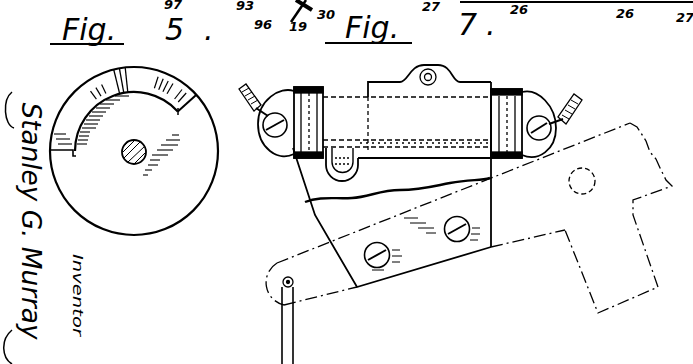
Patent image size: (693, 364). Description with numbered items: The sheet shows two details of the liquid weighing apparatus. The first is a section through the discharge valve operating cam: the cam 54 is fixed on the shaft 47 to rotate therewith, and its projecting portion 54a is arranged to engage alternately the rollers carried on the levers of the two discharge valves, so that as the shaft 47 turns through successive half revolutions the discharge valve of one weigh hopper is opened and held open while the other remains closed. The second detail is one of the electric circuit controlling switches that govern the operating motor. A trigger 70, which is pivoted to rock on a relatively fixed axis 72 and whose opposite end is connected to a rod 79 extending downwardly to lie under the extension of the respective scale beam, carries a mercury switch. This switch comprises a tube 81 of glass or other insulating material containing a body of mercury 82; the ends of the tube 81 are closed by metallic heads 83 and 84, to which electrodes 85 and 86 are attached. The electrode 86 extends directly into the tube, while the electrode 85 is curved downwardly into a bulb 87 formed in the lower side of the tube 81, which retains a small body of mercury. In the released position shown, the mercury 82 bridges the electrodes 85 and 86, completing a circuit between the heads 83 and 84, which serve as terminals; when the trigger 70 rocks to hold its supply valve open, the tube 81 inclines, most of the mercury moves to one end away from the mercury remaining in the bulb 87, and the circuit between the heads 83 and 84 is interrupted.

In FIG. 5, the shaft 47 is at (124, 160).
In FIG. 5, the cam 54 is at (143, 235).
In FIG. 5, the projecting portion of the cam 54a is at (118, 72).
In FIG. 7, the trigger 70 is at (512, 237).
In FIG. 7, the relatively fixed axis 72 is at (582, 194).
In FIG. 7, the rod 79 is at (295, 330).
In FIG. 7, the tube 81 is at (340, 97).
In FIG. 7, the body of mercury 82 is at (403, 144).
In FIG. 7, the metallic head 83 is at (291, 138).
In FIG. 7, the metallic head 84 is at (522, 93).
In FIG. 7, the electrode 85 is at (336, 148).
In FIG. 7, the electrode 86 is at (485, 142).
In FIG. 7, the bulb 87 is at (328, 172).